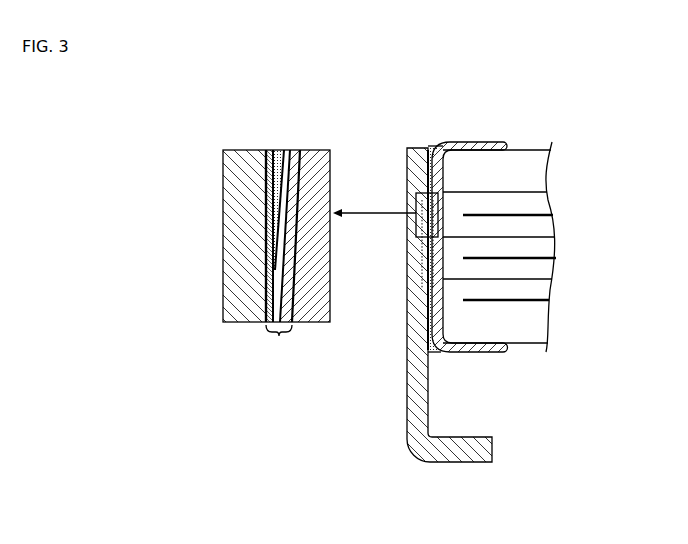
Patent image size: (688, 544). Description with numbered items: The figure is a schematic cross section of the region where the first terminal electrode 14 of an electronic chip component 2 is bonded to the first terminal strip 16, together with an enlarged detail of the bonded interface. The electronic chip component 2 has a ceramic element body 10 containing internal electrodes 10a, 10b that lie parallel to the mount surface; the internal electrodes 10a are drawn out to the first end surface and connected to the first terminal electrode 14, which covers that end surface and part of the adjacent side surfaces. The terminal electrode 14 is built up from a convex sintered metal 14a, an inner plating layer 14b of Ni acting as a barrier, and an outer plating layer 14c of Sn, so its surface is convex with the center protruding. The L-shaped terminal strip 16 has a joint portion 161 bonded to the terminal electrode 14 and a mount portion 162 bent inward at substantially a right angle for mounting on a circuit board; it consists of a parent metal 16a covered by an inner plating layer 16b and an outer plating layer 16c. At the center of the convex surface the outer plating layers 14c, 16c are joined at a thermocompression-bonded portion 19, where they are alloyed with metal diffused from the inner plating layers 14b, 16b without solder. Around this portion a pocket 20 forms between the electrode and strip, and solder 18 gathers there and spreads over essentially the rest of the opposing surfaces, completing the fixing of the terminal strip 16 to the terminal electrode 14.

The electronic chip component 2 is at (531, 226).
The ceramic element body 10 is at (531, 247).
The internal electrodes 10a is at (533, 193).
The internal electrodes 10b is at (533, 216).
The first terminal electrode 14 is at (394, 232).
The sintered metal 14a is at (312, 192).
The inner plating layer 14b is at (294, 178).
The outer plating layer 14c is at (300, 149).
The first terminal strip 16 is at (308, 329).
The parent metal 16a is at (235, 245).
The inner plating layer 16b is at (272, 220).
The outer plating layer 16c is at (275, 187).
The solder 18 is at (281, 150).
The thermocompression-bonded portion 19 is at (418, 260).
The pocket 20 is at (266, 150).
The joint portion 161 is at (408, 306).
The mount portion 162 is at (463, 457).